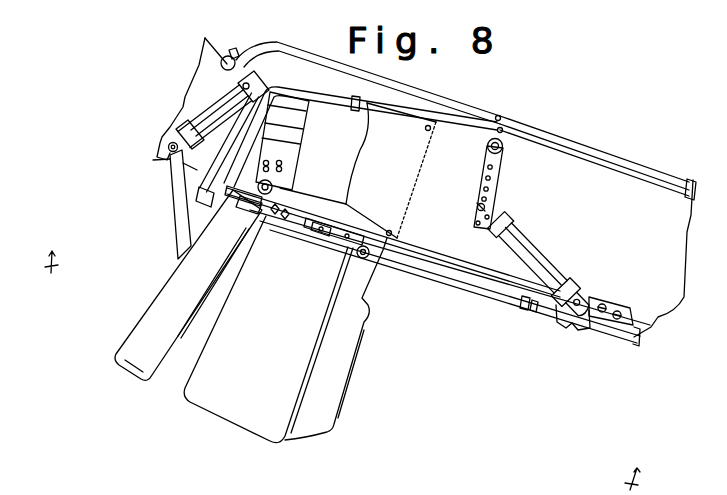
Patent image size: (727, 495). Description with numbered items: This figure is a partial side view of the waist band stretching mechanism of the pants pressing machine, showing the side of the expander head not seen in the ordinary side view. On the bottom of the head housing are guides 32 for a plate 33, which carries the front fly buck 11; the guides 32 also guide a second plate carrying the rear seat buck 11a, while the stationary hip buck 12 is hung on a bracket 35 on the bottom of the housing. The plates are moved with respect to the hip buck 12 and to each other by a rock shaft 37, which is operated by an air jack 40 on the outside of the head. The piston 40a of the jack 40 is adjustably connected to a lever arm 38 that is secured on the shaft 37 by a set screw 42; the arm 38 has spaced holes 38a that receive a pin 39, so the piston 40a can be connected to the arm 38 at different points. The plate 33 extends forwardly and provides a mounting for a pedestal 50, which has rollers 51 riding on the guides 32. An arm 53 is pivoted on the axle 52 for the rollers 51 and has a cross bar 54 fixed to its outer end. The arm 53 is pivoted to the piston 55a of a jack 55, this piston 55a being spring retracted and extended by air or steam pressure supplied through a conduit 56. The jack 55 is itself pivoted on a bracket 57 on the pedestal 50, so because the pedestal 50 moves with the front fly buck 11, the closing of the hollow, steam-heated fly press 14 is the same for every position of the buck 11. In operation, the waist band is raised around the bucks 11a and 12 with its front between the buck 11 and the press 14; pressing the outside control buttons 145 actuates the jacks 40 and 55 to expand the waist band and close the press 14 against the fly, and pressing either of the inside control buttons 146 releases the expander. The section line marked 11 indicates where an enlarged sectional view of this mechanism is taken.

The fly buck 11 is at (350, 362).
The seat buck 11a is at (334, 429).
The hip buck 12 is at (190, 386).
The fly press 14 is at (158, 297).
The guides 32 is at (262, 191).
The plate 33 is at (227, 181).
The bracket 35 is at (294, 216).
The rock shaft 37 is at (503, 148).
The lever arm 38 is at (502, 173).
The spaced holes 38a is at (486, 170).
The pin 39 is at (477, 205).
The air jack 40 is at (543, 252).
The piston 40a is at (499, 214).
The set screw 42 is at (525, 135).
The pedestal 50 is at (290, 142).
The rollers 51 is at (280, 180).
The axle 52 is at (277, 187).
The arm 53 is at (202, 174).
The cross bar 54 is at (176, 205).
The jack 55 is at (218, 102).
The piston 55a is at (167, 143).
The conduit 56 is at (262, 52).
The bracket 57 is at (261, 90).
The outside control buttons 145 is at (337, 223).
The inside control buttons 146 is at (317, 215).